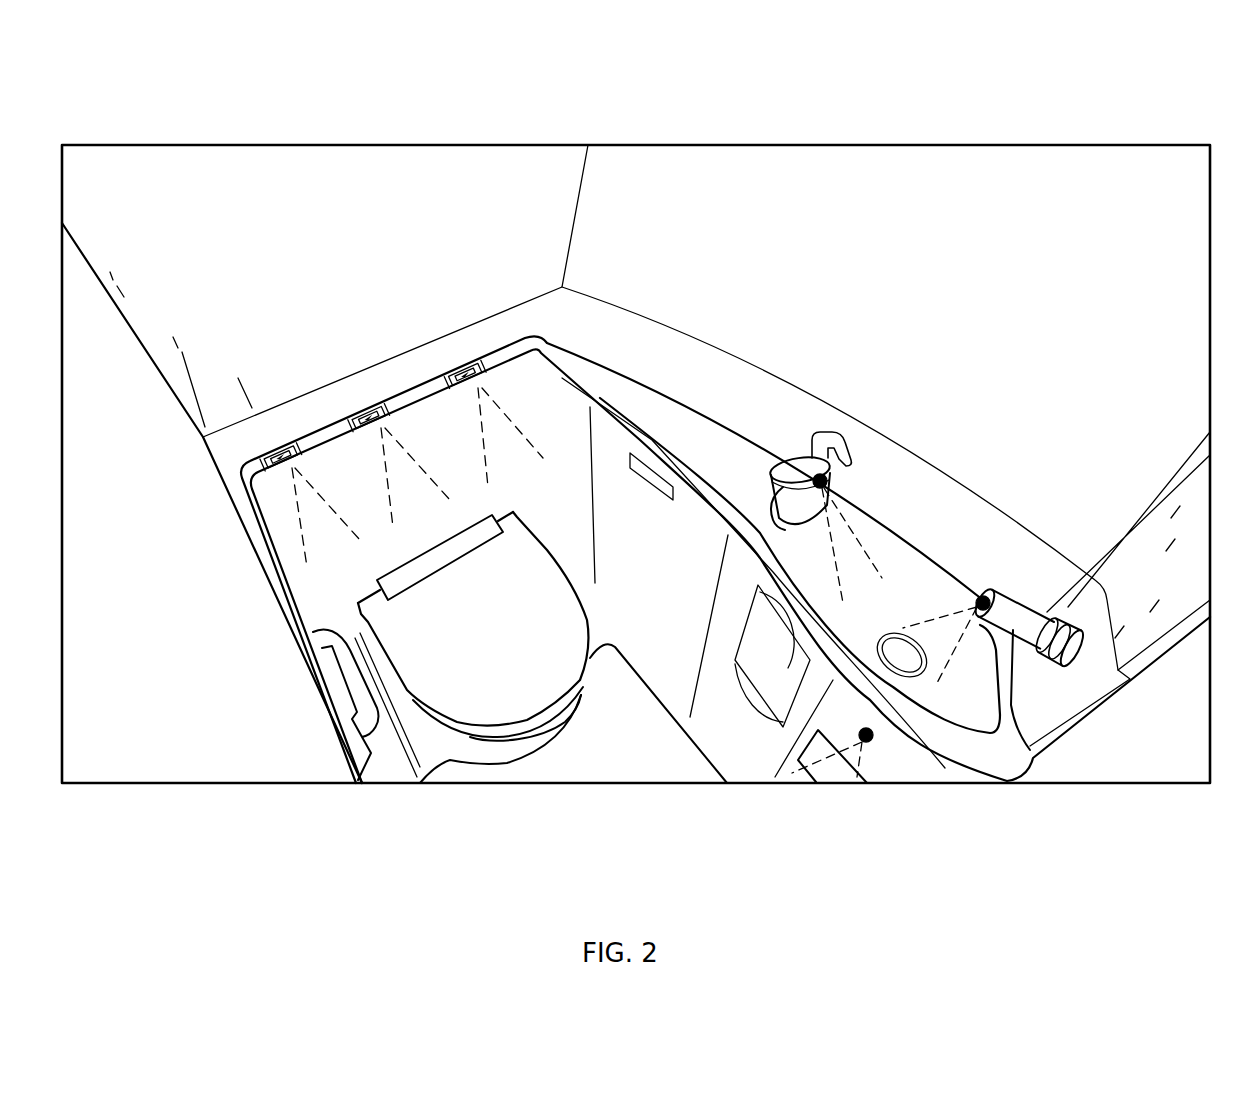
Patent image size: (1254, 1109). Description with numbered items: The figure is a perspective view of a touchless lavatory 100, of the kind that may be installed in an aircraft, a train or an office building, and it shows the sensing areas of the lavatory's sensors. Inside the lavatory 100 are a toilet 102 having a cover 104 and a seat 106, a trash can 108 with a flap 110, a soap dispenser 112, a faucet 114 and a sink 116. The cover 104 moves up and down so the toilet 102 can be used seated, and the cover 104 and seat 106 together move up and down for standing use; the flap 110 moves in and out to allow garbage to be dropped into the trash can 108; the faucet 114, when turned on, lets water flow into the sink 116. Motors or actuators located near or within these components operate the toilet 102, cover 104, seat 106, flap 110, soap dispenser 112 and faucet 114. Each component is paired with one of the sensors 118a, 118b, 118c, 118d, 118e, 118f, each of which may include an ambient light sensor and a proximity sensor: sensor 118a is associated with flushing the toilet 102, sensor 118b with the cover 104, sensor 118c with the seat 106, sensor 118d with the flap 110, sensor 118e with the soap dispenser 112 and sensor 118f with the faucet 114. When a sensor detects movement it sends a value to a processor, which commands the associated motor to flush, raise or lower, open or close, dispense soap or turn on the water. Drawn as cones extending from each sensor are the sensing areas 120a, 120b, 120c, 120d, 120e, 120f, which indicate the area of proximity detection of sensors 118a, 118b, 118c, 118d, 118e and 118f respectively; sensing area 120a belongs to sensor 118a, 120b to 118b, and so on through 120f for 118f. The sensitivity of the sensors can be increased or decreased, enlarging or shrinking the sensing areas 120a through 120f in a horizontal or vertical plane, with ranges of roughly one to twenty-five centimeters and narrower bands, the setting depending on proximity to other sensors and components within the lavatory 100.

The touchless lavatory 100 is at (175, 117).
The toilet 102 is at (447, 737).
The cover 104 is at (472, 737).
The seat 106 is at (512, 678).
The trash can 108 is at (810, 802).
The flap 110 is at (814, 772).
The soap dispenser 112 is at (822, 430).
The faucet 114 is at (1050, 607).
The sink 116 is at (957, 560).
The sensor 118a is at (277, 450).
The sensor 118b is at (366, 412).
The sensor 118c is at (465, 368).
The sensor 118d is at (870, 742).
The sensor 118e is at (826, 478).
The sensor 118f is at (985, 598).
The sensing area 120a is at (282, 522).
The sensing area 120b is at (408, 437).
The sensing area 120c is at (505, 397).
The sensing area 120d is at (862, 795).
The sensing area 120e is at (857, 520).
The sensing area 120f is at (930, 610).